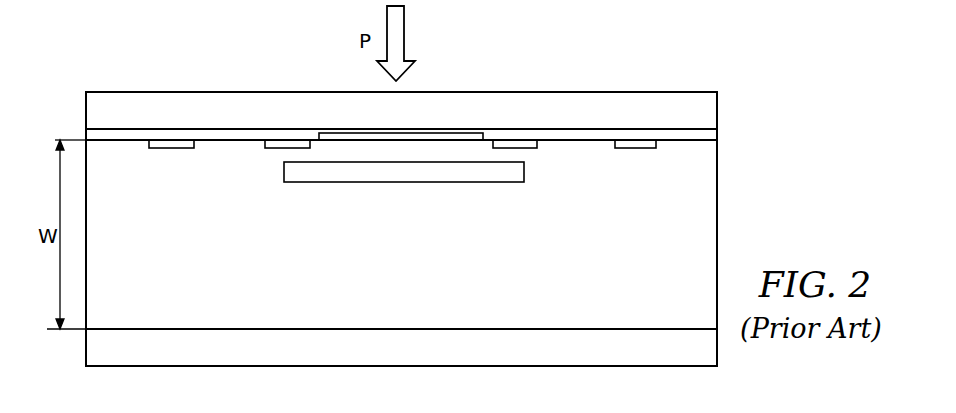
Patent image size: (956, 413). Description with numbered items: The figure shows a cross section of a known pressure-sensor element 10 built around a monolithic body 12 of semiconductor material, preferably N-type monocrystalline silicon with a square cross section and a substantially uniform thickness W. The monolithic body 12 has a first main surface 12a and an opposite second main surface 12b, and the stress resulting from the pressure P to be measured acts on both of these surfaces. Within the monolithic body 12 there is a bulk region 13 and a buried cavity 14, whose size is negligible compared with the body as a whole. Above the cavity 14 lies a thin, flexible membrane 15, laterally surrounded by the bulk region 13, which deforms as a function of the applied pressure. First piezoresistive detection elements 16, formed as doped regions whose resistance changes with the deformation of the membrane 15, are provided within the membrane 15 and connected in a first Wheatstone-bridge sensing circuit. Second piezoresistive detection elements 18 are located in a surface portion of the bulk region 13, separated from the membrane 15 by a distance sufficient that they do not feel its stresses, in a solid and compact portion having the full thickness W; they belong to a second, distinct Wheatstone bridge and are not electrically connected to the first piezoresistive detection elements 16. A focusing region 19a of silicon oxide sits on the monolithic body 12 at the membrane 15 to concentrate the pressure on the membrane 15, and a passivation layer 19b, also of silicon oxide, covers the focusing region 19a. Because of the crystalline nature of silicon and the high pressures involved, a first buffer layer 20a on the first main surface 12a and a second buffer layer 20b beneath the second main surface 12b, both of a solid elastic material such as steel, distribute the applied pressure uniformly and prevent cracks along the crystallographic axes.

The pressure-sensor element 10 is at (792, 197).
The monolithic body 12 is at (712, 243).
The first main surface 12a is at (120, 127).
The second main surface 12b is at (98, 332).
The bulk region 13 is at (364, 269).
The cavity 14 is at (490, 172).
The membrane 15 is at (377, 150).
The first piezoresistive detection elements 16 is at (285, 146).
The second piezoresistive detection elements 18 is at (182, 146).
The focusing region 19a is at (468, 137).
The passivation layer 19b is at (712, 140).
The first buffer layer 20a is at (162, 104).
The second buffer layer 20b is at (688, 353).